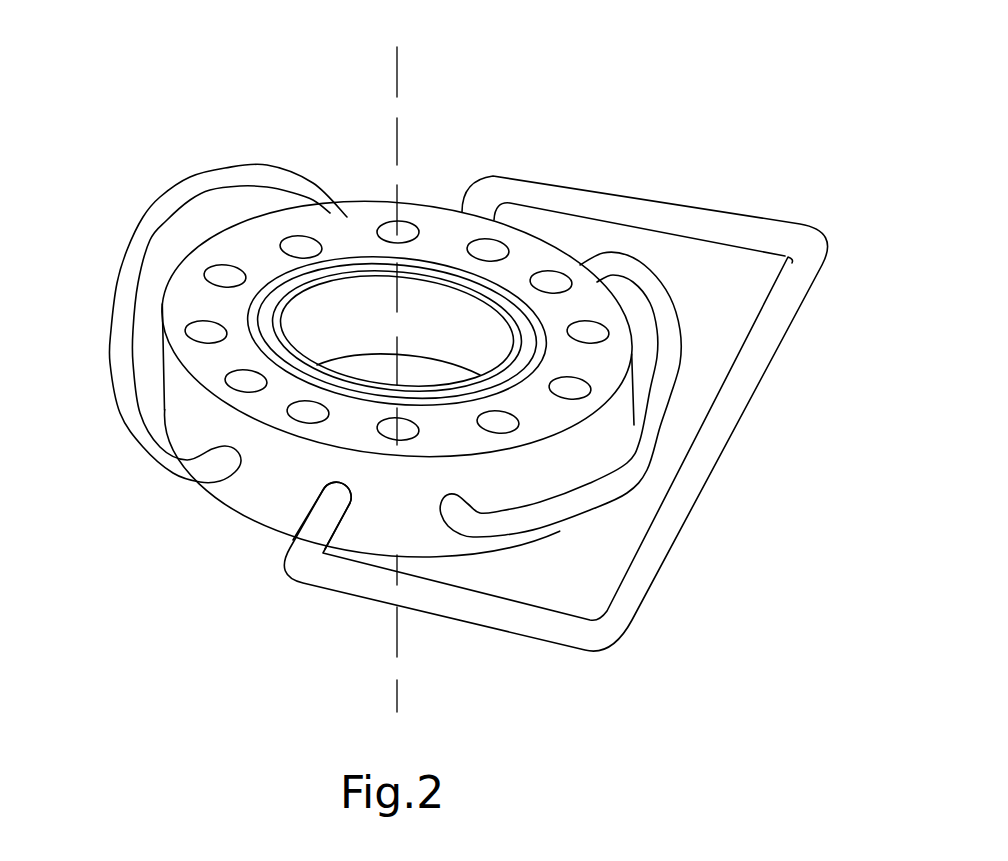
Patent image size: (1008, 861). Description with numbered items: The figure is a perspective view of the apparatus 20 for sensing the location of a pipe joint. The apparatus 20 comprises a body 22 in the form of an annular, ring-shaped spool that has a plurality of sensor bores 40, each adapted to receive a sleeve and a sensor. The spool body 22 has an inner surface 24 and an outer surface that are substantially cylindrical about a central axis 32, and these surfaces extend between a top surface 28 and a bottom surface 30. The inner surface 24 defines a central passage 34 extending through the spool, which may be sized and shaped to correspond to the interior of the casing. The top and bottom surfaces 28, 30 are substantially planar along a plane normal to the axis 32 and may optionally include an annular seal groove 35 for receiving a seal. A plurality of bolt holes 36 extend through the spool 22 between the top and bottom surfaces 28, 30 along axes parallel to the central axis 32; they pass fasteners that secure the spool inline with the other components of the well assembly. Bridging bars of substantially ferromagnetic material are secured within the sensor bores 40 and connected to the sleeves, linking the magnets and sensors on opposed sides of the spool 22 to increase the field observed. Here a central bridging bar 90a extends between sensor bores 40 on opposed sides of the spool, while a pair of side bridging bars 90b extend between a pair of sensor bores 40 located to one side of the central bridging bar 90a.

The apparatus 20 is at (425, 146).
The body 22 is at (245, 221).
The inner surface 24 is at (338, 311).
The top surface 28 is at (190, 297).
The bottom surface 30 is at (225, 495).
The central axis 32 is at (397, 128).
The central passage 34 is at (432, 308).
The seal groove 35 is at (512, 297).
The bolt holes 36 is at (187, 323).
The sensor bores 40 is at (318, 491).
The central bridging bar 90a is at (697, 207).
The side bridging bars 90b is at (137, 448).